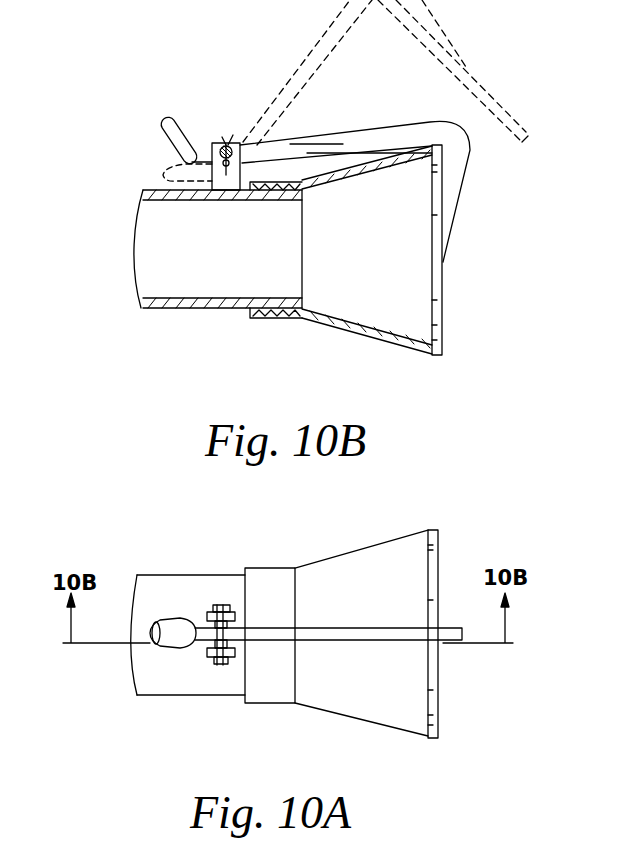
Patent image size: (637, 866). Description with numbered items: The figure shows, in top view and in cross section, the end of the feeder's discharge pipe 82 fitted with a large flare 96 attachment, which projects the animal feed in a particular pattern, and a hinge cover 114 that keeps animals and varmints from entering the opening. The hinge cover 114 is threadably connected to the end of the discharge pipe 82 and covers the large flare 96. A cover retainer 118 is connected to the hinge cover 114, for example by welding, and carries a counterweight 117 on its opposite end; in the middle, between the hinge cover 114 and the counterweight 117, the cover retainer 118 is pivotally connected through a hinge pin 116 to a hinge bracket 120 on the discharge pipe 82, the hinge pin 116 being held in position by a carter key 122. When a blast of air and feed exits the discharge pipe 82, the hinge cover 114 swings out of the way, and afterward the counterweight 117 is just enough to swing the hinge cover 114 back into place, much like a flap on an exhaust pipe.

In FIG. 10B, the discharge pipe 82 is at (208, 310).
In FIG. 10A, the discharge pipe 82 is at (142, 623).
In FIG. 10B, the large flare 96 is at (340, 318).
In FIG. 10A, the large flare 96 is at (357, 553).
In FIG. 10B, the hinge cover 114 is at (443, 287).
In FIG. 10A, the hinge cover 114 is at (433, 665).
In FIG. 10B, the hinge pin 116 is at (232, 141).
In FIG. 10A, the hinge pin 116 is at (222, 606).
In FIG. 10B, the counterweight 117 is at (172, 147).
In FIG. 10A, the counterweight 117 is at (177, 643).
In FIG. 10B, the cover retainer 118 is at (426, 122).
In FIG. 10A, the cover retainer 118 is at (375, 642).
In FIG. 10B, the hinge bracket 120 is at (220, 187).
In FIG. 10A, the hinge bracket 120 is at (207, 618).
In FIG. 10B, the carter key 122 is at (218, 140).
In FIG. 10A, the carter key 122 is at (229, 664).